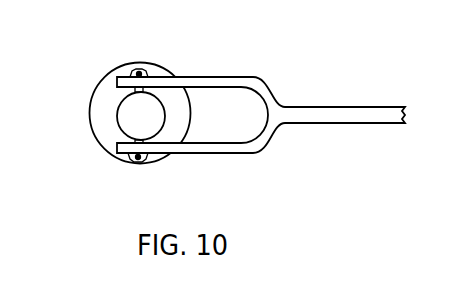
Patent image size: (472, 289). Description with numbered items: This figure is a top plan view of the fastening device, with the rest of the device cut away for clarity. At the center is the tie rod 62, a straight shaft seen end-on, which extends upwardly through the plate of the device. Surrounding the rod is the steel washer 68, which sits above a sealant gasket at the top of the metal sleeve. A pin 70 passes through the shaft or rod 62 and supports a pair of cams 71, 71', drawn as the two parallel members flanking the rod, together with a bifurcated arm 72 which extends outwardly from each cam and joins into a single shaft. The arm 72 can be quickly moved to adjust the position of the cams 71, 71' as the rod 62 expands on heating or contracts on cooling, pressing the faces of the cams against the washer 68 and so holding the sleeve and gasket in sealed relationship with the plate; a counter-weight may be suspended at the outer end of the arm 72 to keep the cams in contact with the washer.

The tie rod 62 is at (117, 117).
The washer 68 is at (91, 99).
The pin 70 is at (141, 161).
The cam 71 is at (187, 155).
The cam 71' is at (201, 72).
The bifurcated arm 72 is at (340, 124).